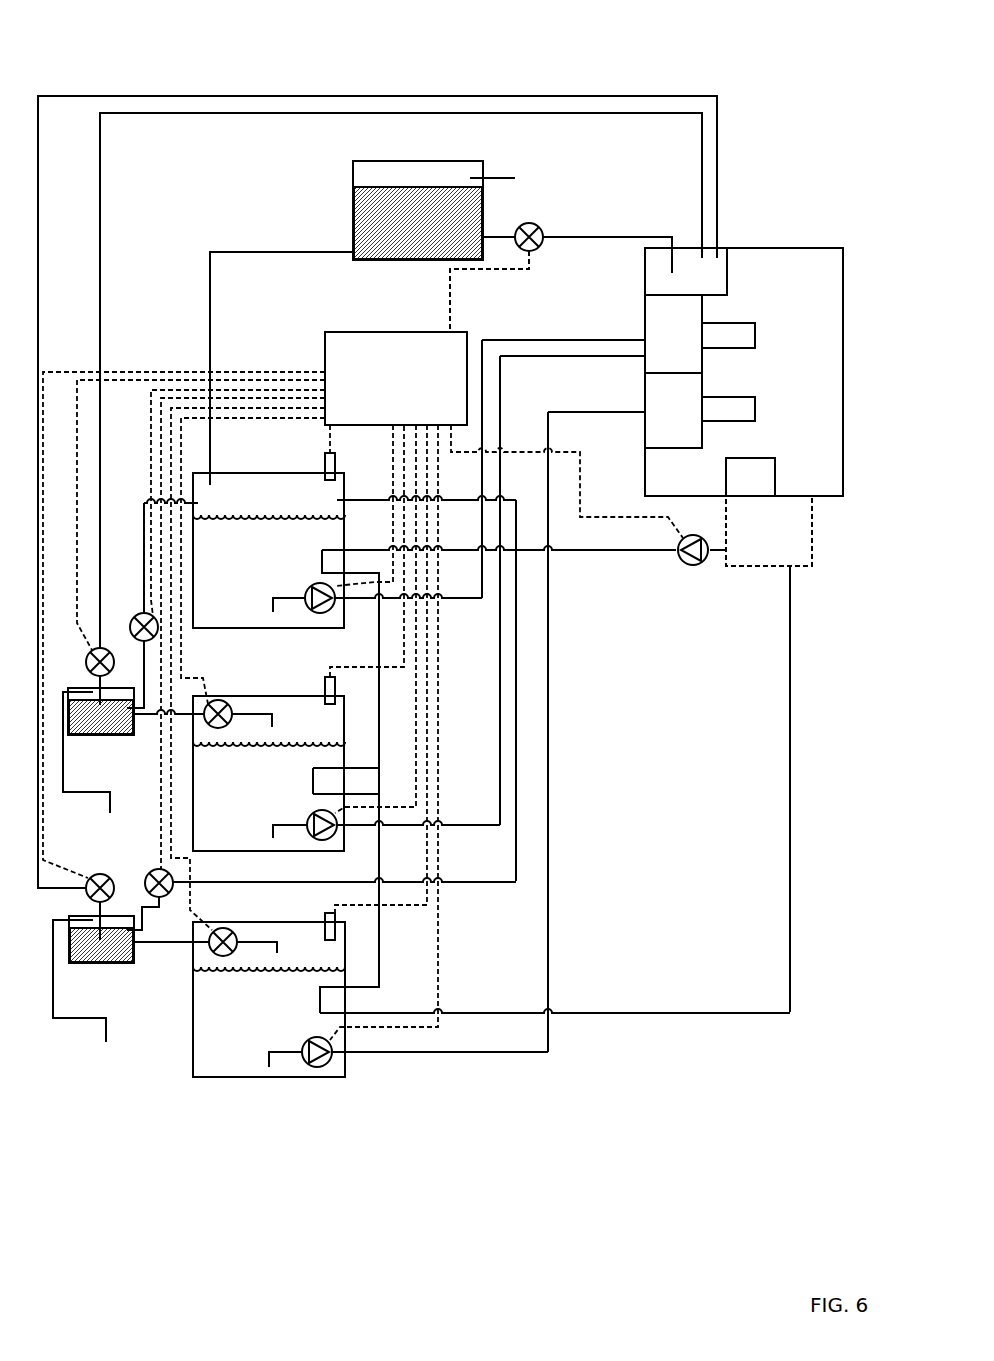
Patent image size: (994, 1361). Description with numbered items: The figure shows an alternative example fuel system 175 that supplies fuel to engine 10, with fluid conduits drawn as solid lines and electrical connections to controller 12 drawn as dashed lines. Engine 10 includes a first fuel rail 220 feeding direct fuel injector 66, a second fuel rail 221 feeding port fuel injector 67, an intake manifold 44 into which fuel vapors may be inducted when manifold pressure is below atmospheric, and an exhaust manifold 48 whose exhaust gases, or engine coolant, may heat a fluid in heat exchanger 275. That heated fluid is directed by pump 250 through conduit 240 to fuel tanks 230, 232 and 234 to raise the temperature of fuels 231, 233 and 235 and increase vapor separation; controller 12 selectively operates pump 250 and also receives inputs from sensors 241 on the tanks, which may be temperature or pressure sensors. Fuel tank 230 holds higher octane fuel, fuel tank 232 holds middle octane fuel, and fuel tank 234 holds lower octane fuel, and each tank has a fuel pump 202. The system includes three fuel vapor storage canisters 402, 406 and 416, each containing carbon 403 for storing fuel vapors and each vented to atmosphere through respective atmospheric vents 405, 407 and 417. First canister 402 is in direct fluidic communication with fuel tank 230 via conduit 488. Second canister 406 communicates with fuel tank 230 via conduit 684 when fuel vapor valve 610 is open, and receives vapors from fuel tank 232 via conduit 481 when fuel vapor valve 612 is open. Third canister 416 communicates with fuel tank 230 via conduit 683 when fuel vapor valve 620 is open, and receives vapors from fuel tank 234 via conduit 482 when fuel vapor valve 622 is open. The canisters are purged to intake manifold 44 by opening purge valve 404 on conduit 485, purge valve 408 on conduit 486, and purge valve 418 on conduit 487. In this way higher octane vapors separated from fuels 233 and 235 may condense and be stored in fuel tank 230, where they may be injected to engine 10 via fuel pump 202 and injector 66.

The fuel system 175 is at (143, 28).
The conduit 487 is at (40, 98).
The conduit 486 is at (133, 114).
The conduit 488 is at (238, 252).
The first fuel vapor storage canister 402 is at (389, 198).
The carbon 403 is at (418, 223).
The atmospheric vent 405 is at (490, 178).
The purge valve 404 is at (534, 223).
The conduit 485 is at (561, 240).
The controller 12 is at (396, 378).
The engine 10 is at (818, 250).
The intake manifold 44 is at (686, 271).
The first fuel rail 220 is at (673, 334).
The second fuel rail 221 is at (673, 410).
The direct fuel injector 66 is at (728, 335).
The port fuel injector 67 is at (728, 409).
The exhaust manifold 48 is at (750, 477).
The heat exchanger 275 is at (769, 531).
The conduit 240 is at (595, 552).
The pump 250 is at (682, 565).
The conduit 683 is at (457, 884).
The fuel tank 230 is at (235, 473).
The fuel 231 is at (266, 545).
The sensors 241 is at (323, 460).
The fuel pump 202 is at (310, 588).
The fuel tank 232 is at (240, 696).
The fuel 233 is at (266, 769).
The fuel tank 234 is at (193, 1077).
The fuel 235 is at (266, 994).
The conduit 684 is at (144, 512).
The fuel vapor valve 610 is at (136, 620).
The purge valve 408 is at (90, 666).
The second fuel vapor storage canister 406 is at (98, 736).
The atmospheric vent 407 is at (90, 792).
The fuel vapor valve 612 is at (216, 702).
The conduit 481 is at (276, 712).
The fuel vapor valve 620 is at (152, 868).
The purge valve 418 is at (88, 896).
The third fuel vapor storage canister 416 is at (100, 963).
The atmospheric vent 417 is at (76, 1018).
The fuel vapor valve 622 is at (220, 932).
The conduit 482 is at (280, 940).